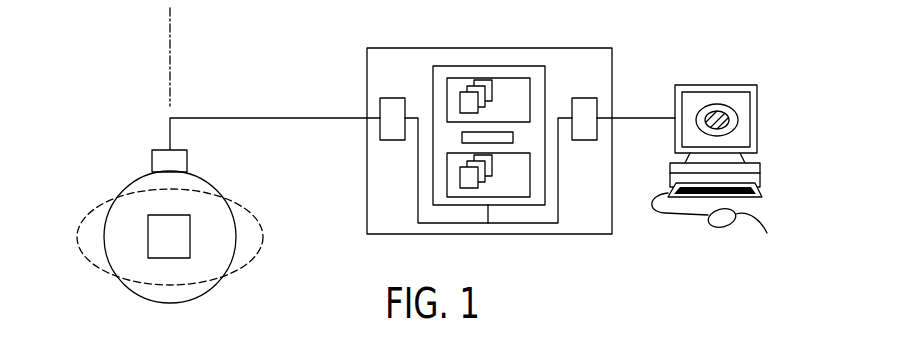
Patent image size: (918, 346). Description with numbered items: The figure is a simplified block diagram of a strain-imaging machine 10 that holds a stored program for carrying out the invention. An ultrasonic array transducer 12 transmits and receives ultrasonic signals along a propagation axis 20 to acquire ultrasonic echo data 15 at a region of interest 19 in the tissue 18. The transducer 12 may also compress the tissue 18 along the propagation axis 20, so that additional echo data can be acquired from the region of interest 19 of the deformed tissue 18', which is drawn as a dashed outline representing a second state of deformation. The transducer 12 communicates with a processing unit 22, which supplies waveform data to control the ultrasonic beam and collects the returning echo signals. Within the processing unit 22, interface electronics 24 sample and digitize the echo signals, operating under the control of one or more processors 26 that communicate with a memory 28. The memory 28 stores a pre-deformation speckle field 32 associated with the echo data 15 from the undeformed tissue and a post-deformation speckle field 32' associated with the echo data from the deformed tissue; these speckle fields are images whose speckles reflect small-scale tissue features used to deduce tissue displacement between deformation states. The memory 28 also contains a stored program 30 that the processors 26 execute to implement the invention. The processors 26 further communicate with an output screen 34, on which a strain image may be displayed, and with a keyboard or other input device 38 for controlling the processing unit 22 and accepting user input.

The strain-imaging machine 10 is at (118, 108).
The ultrasonic array transducer 12 is at (188, 162).
The ultrasonic echo data 15 is at (309, 117).
The tissue 18 is at (173, 249).
The deformed tissue 18' is at (185, 243).
The region of interest 19 is at (180, 250).
The propagation axis 20 is at (172, 46).
The processing unit 22 is at (383, 48).
The interface electronics 24 is at (392, 141).
The processors 26 is at (587, 98).
The memory 28 is at (535, 66).
The stored program 30 is at (462, 137).
The speckle field 32 is at (488, 68).
The post-deformation speckle field 32' is at (492, 215).
The output screen 34 is at (757, 97).
The input device 38 is at (762, 191).